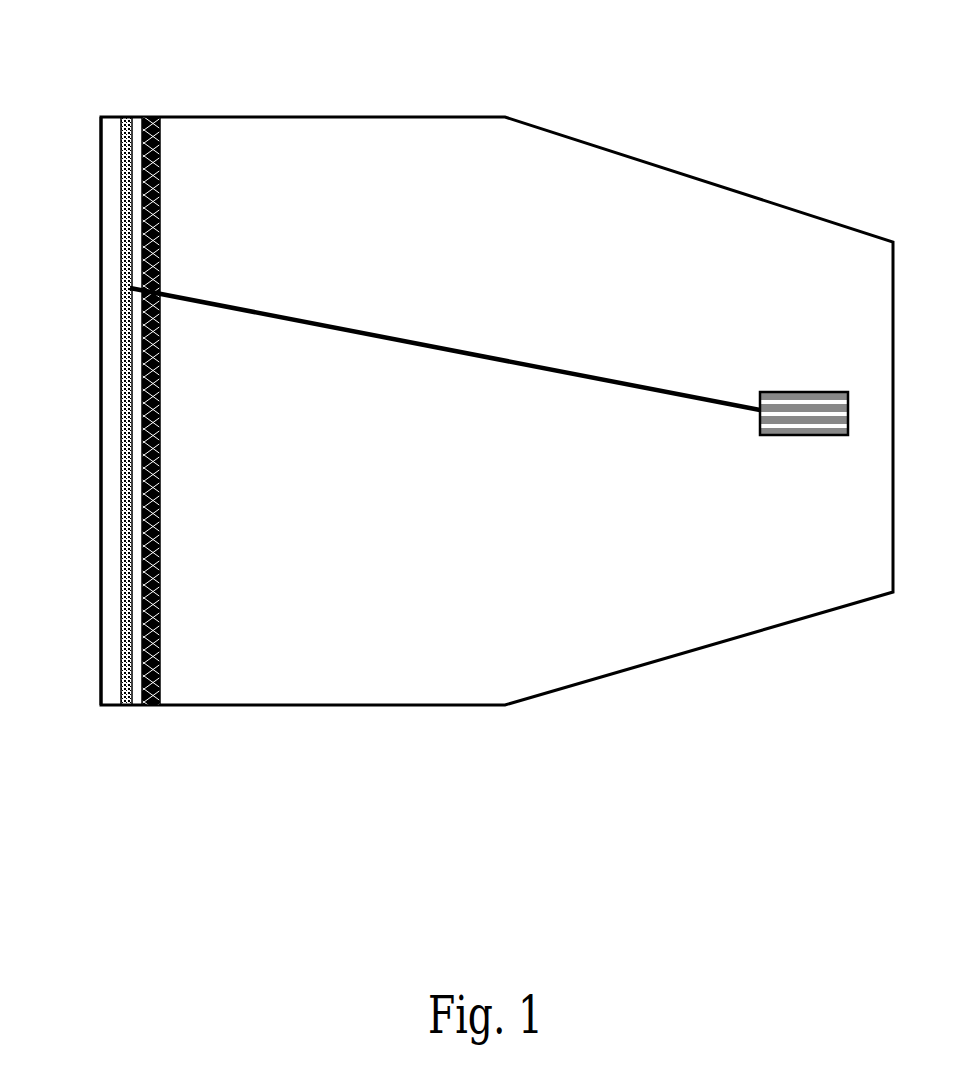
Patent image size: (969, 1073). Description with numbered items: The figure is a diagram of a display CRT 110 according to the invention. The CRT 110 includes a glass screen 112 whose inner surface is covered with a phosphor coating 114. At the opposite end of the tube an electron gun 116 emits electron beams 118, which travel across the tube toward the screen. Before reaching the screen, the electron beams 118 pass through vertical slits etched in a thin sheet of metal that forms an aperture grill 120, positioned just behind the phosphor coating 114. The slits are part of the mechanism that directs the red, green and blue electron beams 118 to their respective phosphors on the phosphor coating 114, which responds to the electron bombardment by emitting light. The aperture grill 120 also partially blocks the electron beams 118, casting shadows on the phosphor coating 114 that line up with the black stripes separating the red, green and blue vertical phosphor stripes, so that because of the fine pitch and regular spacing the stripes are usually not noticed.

The display CRT 110 is at (658, 231).
The glass screen 112 is at (111, 421).
The phosphor coating 114 is at (127, 125).
The electron gun 116 is at (812, 437).
The electron beams 118 is at (227, 307).
The aperture grill 120 is at (160, 588).